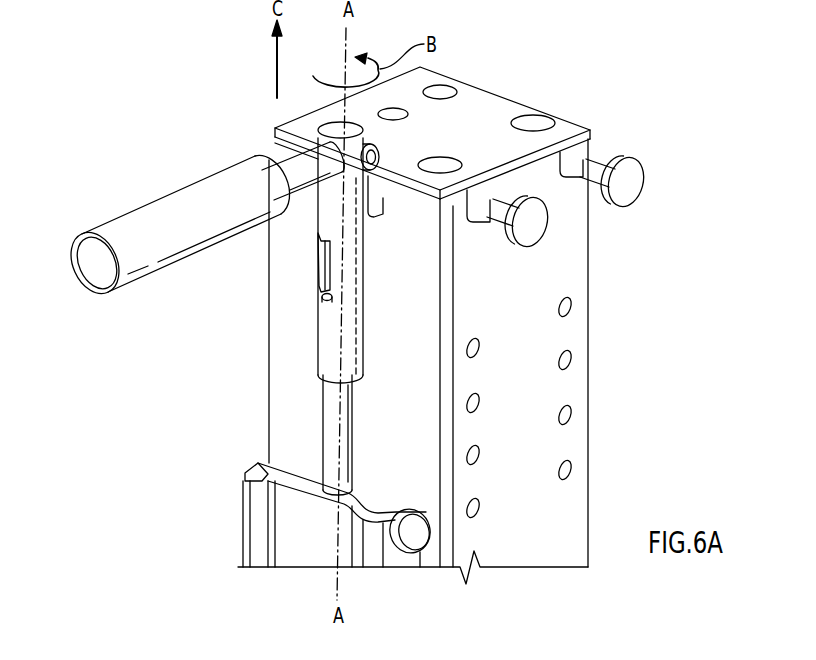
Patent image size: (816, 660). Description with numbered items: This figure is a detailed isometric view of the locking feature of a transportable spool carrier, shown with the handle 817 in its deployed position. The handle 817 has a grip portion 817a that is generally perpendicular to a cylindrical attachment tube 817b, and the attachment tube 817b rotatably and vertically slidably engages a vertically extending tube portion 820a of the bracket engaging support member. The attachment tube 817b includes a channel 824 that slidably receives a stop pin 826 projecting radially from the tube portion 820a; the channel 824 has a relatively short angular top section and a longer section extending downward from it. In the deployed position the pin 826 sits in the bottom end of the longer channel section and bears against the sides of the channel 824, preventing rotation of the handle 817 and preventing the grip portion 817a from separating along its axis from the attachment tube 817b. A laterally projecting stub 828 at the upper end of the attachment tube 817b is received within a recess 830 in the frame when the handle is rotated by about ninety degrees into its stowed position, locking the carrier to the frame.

The handle 817 is at (262, 122).
The grip portion 817a is at (123, 227).
The cylindrical attachment tube 817b is at (320, 353).
The vertically extending tube portion 820a is at (323, 433).
The channel 824 is at (323, 268).
The stop pin 826 is at (320, 308).
The laterally projecting stub 828 is at (397, 144).
The recess 830 is at (385, 197).